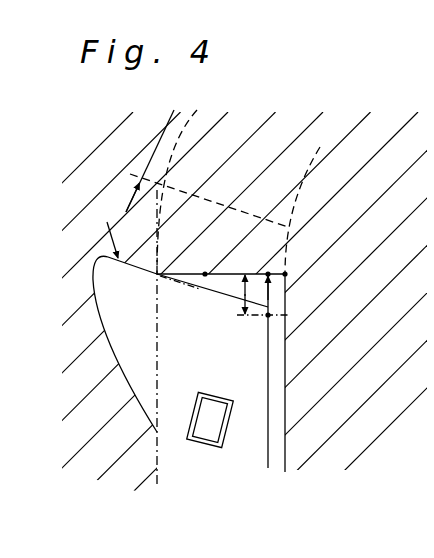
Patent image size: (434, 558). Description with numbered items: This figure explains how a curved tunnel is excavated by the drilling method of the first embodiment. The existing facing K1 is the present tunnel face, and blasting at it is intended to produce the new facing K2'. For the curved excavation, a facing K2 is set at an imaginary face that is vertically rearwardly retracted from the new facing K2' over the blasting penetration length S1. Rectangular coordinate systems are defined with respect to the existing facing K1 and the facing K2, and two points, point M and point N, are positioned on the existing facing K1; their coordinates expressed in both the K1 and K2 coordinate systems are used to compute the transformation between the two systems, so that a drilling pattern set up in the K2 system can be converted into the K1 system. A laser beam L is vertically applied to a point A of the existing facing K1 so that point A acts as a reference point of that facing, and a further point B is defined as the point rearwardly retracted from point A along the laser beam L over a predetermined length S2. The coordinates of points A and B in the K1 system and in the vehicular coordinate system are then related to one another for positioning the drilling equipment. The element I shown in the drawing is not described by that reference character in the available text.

The blasting penetration length S1 is at (140, 184).
The predetermined length S2 is at (248, 292).
The existing facing K1 is at (180, 272).
The facing for the curved excavation K2 is at (212, 306).
The new facing K2' is at (225, 192).
The point M is at (211, 260).
The point A is at (267, 260).
The point N is at (289, 260).
The point B is at (273, 316).
The sensor / measuring element I is at (207, 432).
The laser beam L is at (268, 443).